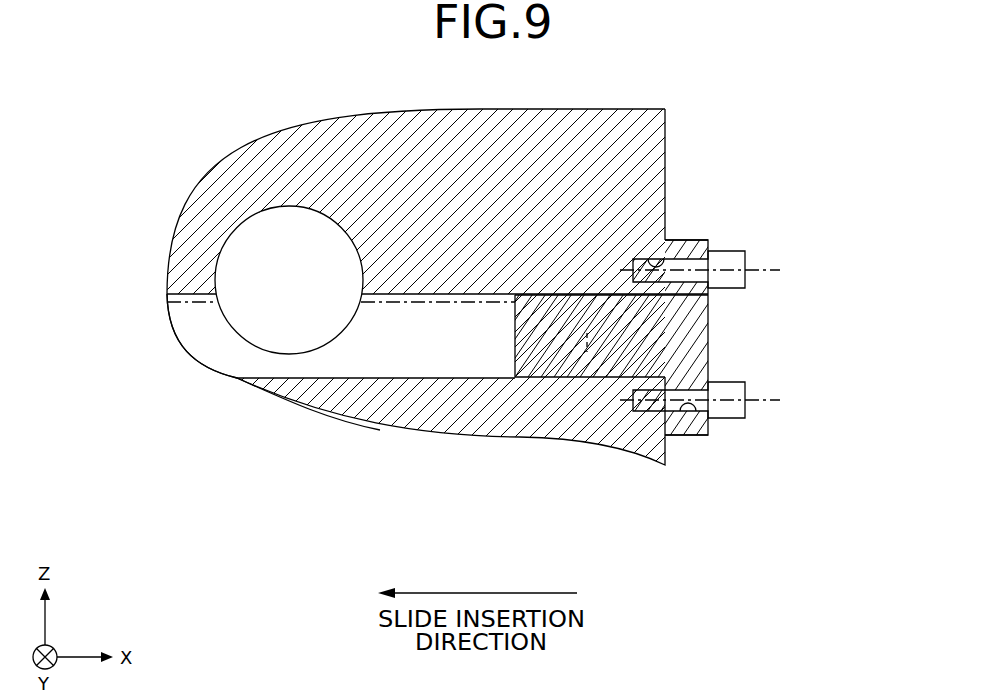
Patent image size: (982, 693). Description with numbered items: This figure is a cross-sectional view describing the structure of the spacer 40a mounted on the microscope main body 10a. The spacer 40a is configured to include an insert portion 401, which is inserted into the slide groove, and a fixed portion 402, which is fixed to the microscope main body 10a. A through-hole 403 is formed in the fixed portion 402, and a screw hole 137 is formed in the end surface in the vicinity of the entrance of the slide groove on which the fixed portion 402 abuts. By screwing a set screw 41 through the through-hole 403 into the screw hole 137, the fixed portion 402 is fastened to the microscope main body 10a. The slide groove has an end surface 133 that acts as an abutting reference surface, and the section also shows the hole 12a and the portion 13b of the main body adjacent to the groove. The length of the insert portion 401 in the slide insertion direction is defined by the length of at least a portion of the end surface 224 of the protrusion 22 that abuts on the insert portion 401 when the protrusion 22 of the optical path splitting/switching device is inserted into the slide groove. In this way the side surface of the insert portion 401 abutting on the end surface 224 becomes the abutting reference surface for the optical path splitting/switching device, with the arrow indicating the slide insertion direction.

The microscope main body 10a is at (635, 140).
The circular hole 12a is at (265, 238).
The end surface of the slide groove 133 is at (373, 355).
The protrusion 22 is at (192, 307).
The curved lower-left edge 13b is at (197, 362).
The end surface of the protrusion 224 is at (322, 358).
The spacer 40a is at (687, 332).
The insert portion 401 is at (540, 360).
The screw hole 137 is at (666, 240).
The set screw 41 is at (742, 260).
The fixed portion 402 is at (670, 435).
The through-hole 403 is at (697, 435).